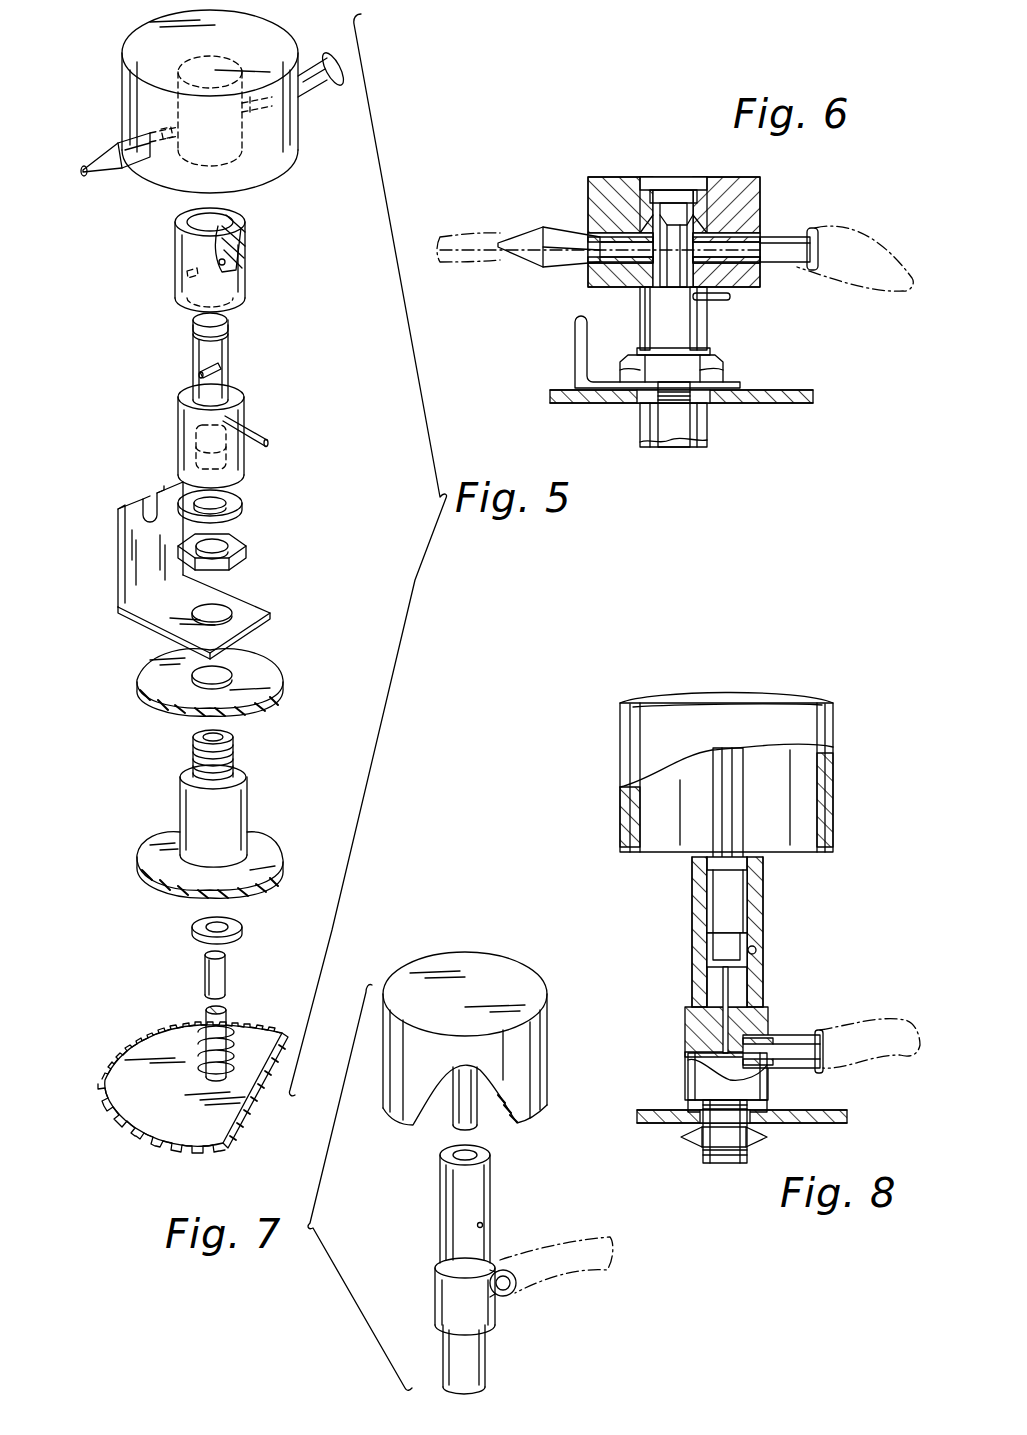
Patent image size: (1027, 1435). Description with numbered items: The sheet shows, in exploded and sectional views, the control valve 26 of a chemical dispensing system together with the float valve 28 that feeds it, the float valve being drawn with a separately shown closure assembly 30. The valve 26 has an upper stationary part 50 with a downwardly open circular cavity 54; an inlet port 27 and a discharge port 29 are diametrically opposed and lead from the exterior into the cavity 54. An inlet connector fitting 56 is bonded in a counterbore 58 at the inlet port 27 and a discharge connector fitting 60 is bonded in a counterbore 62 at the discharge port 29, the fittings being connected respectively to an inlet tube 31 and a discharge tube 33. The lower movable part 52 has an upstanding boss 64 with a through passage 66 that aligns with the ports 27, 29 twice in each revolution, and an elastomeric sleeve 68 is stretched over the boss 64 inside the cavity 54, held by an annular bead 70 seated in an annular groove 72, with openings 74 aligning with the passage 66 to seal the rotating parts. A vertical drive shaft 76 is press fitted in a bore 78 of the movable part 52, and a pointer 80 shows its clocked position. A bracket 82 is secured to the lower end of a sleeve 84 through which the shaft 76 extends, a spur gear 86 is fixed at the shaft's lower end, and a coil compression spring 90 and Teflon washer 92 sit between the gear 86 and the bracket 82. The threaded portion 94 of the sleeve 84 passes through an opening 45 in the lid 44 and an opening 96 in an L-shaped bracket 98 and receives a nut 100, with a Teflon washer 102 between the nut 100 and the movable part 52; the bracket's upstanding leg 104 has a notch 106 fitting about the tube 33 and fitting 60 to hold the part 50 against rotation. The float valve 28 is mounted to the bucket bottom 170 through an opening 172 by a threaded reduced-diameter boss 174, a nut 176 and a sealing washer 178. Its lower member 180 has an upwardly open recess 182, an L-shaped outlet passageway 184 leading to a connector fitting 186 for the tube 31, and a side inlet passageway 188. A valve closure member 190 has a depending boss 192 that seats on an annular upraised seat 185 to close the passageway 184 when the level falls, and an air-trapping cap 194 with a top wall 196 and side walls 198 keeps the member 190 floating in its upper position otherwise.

In FIG. 5, the valve 26 is at (80, 215).
In FIG. 6, the valve 26 is at (790, 172).
In FIG. 5, the inlet port 27 is at (297, 133).
In FIG. 6, the inlet port 27 is at (722, 187).
In FIG. 8, the float valve 28 is at (820, 902).
In FIG. 7, the float valve 28 is at (425, 1238).
In FIG. 5, the discharge port 29 is at (195, 133).
In FIG. 6, the discharge port 29 is at (640, 265).
In FIG. 8, the knob 30 is at (825, 690).
In FIG. 7, the knob 30 is at (455, 946).
In FIG. 6, the inlet tube 31 is at (905, 242).
In FIG. 8, the inlet tube 31 is at (870, 1027).
In FIG. 7, the inlet tube 31 is at (590, 1270).
In FIG. 6, the discharge tube 33 is at (455, 230).
In FIG. 5, the lid 44 is at (267, 667).
In FIG. 6, the lid 44 is at (800, 403).
In FIG. 5, the opening 45 is at (207, 675).
In FIG. 6, the opening 45 is at (640, 408).
In FIG. 5, the upper stationary part 50 is at (148, 38).
In FIG. 6, the upper stationary part 50 is at (595, 187).
In FIG. 5, the lower movable part 52 is at (187, 440).
In FIG. 6, the lower movable part 52 is at (708, 340).
In FIG. 5, the cavity 54 is at (195, 72).
In FIG. 6, the cavity 54 is at (690, 215).
In FIG. 5, the inlet connector fitting 56 is at (325, 62).
In FIG. 6, the inlet connector fitting 56 is at (795, 262).
In FIG. 5, the counterbore 58 is at (293, 110).
In FIG. 6, the counterbore 58 is at (768, 237).
In FIG. 5, the discharge connector fitting 60 is at (122, 140).
In FIG. 6, the discharge connector fitting 60 is at (520, 258).
In FIG. 5, the counterbore 62 is at (135, 117).
In FIG. 6, the counterbore 62 is at (603, 257).
In FIG. 5, the boss 64 is at (228, 348).
In FIG. 6, the boss 64 is at (640, 228).
In FIG. 5, the through passage 66 is at (200, 375).
In FIG. 6, the through passage 66 is at (685, 185).
In FIG. 5, the elastomeric sleeve 68 is at (240, 285).
In FIG. 5, the annular bead 70 is at (227, 224).
In FIG. 6, the annular bead 70 is at (640, 182).
In FIG. 5, the annular groove 72 is at (195, 335).
In FIG. 6, the annular groove 72 is at (673, 200).
In FIG. 5, the openings 74 is at (233, 260).
In FIG. 6, the openings 74 is at (683, 270).
In FIG. 5, the drive shaft 76 is at (227, 972).
In FIG. 5, the bore 78 is at (180, 427).
In FIG. 5, the pointer 80 is at (253, 427).
In FIG. 6, the pointer 80 is at (725, 297).
In FIG. 5, the bracket 82 is at (273, 840).
In FIG. 5, the sleeve 84 is at (190, 807).
In FIG. 6, the sleeve 84 is at (660, 455).
In FIG. 5, the spur gear 86 is at (117, 1067).
In FIG. 5, the coil compression spring 90 is at (197, 1023).
In FIG. 5, the Teflon washer 92 is at (197, 922).
In FIG. 5, the threaded portion 94 is at (233, 753).
In FIG. 6, the threaded portion 94 is at (700, 425).
In FIG. 5, the opening 96 is at (220, 607).
In FIG. 5, the L-shaped bracket 98 is at (123, 597).
In FIG. 6, the L-shaped bracket 98 is at (720, 395).
In FIG. 5, the nut 100 is at (240, 545).
In FIG. 6, the nut 100 is at (725, 370).
In FIG. 5, the Teflon washer 102 is at (240, 497).
In FIG. 6, the Teflon washer 102 is at (715, 350).
In FIG. 5, the upstanding leg 104 is at (118, 553).
In FIG. 6, the upstanding leg 104 is at (580, 330).
In FIG. 5, the notch 106 is at (152, 500).
In FIG. 8, the bottom 170 is at (800, 1112).
In FIG. 8, the opening 172 is at (770, 1137).
In FIG. 8, the threaded reduced-diameter boss 174 is at (725, 1165).
In FIG. 7, the threaded reduced-diameter boss 174 is at (490, 1360).
In FIG. 8, the nut 176 is at (690, 1140).
In FIG. 8, the sealing washer 178 is at (692, 1104).
In FIG. 7, the sealing washer 178 is at (465, 1296).
In FIG. 8, the lower member 180 is at (693, 982).
In FIG. 7, the lower member 180 is at (428, 1192).
In FIG. 8, the recess 182 is at (710, 908).
In FIG. 7, the recess 182 is at (490, 1152).
In FIG. 8, the outlet passageway 184 is at (722, 1010).
In FIG. 8, the annular upraised seat 185 is at (715, 957).
In FIG. 8, the connector fitting 186 is at (790, 1036).
In FIG. 7, the connector fitting 186 is at (518, 1297).
In FIG. 8, the side inlet passageway 188 is at (758, 950).
In FIG. 7, the side inlet passageway 188 is at (484, 1225).
In FIG. 8, the valve closure member 190 is at (835, 723).
In FIG. 7, the valve closure member 190 is at (513, 972).
In FIG. 8, the depending boss 192 is at (740, 820).
In FIG. 7, the depending boss 192 is at (455, 1113).
In FIG. 8, the air-trapping cap 194 is at (620, 810).
In FIG. 8, the top wall 196 is at (736, 692).
In FIG. 7, the top wall 196 is at (437, 983).
In FIG. 8, the side walls 198 is at (640, 735).
In FIG. 7, the side walls 198 is at (530, 1048).